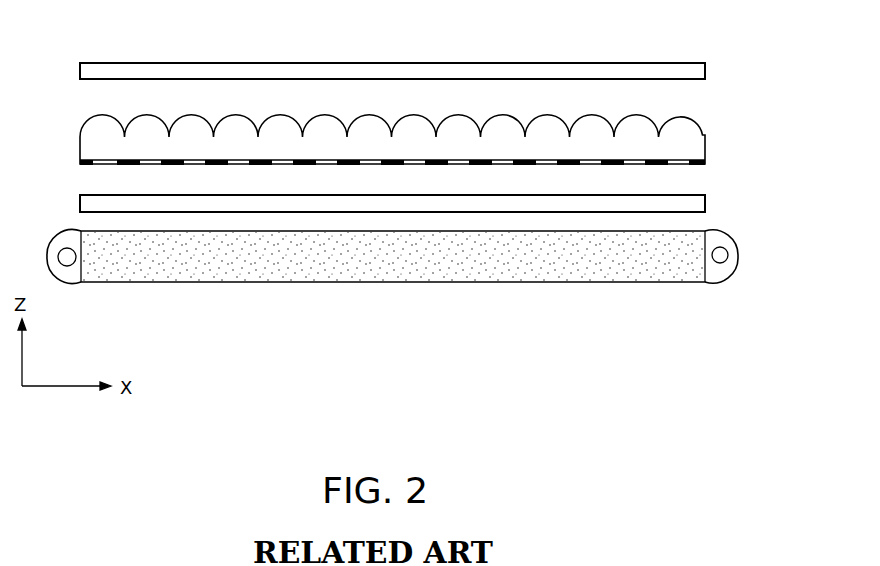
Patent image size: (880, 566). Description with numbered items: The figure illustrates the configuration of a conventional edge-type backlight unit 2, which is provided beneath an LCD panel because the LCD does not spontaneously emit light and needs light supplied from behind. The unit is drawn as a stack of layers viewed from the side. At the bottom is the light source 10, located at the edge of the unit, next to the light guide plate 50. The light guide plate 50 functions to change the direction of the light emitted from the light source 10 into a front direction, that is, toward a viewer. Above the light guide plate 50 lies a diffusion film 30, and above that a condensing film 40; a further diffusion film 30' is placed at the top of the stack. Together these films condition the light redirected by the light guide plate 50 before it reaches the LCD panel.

The edge-type backlight unit 2 is at (423, 195).
The diffusion film 30' is at (439, 59).
The condensing film 40 is at (705, 135).
The diffusion film 30 is at (434, 194).
The light source 10 is at (727, 278).
The light guide plate 50 is at (352, 273).